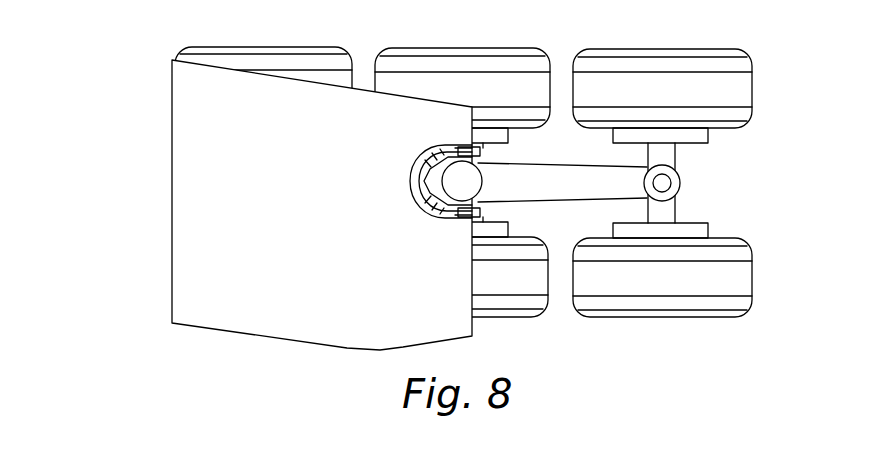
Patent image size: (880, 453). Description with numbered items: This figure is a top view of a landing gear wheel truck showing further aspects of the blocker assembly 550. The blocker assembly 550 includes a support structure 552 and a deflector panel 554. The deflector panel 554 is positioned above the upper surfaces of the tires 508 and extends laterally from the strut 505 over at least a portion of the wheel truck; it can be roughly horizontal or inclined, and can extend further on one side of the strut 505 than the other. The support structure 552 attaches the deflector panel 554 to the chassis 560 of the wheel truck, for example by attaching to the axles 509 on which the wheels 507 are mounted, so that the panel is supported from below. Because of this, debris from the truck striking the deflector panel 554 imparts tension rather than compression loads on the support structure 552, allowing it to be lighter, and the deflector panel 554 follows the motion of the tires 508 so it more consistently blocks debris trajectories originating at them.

The blocker assembly 550 is at (150, 148).
The deflector panel 554 is at (195, 98).
The support structure 552 is at (428, 179).
The strut 505 is at (488, 183).
The chassis 560 is at (550, 157).
The axles 509 is at (677, 158).
The tires 508 is at (686, 48).
The wheels 507 is at (700, 232).